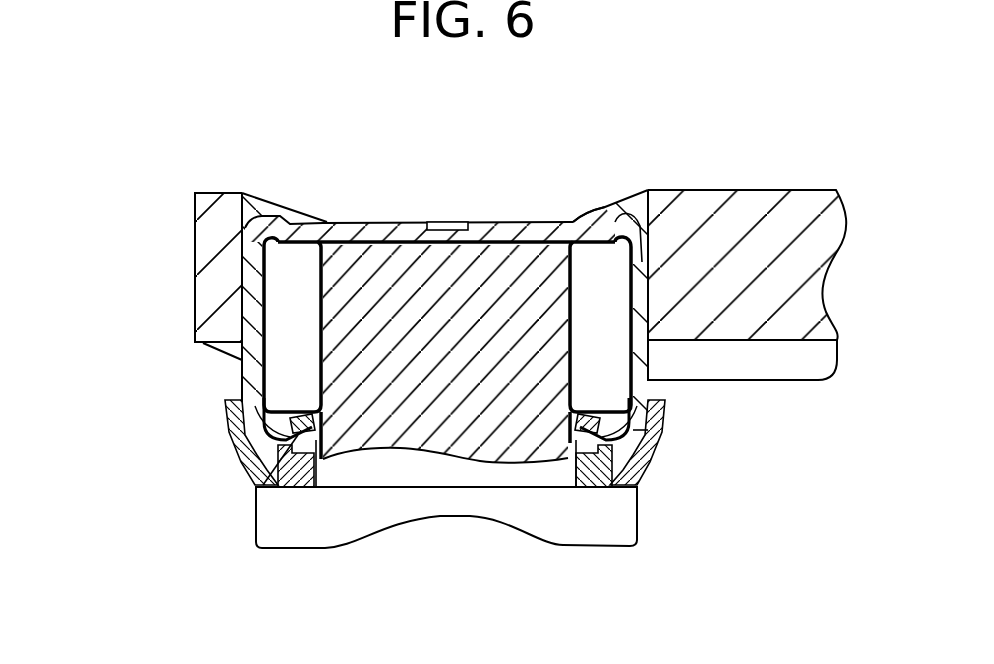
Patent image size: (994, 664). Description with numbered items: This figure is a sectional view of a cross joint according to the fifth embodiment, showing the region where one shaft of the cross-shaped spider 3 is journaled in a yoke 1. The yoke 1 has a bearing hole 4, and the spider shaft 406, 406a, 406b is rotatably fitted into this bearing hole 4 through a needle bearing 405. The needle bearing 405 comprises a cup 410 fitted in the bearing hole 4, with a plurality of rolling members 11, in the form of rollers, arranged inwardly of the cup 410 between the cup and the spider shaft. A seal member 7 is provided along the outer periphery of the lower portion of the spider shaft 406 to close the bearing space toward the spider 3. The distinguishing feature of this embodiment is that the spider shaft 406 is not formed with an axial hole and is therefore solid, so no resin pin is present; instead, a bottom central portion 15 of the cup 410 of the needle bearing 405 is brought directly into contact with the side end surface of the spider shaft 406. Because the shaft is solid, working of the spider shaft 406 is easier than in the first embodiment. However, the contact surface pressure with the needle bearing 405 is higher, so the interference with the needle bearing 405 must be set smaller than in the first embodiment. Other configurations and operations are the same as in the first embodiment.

The yoke 1 is at (773, 190).
The spider 3 is at (241, 496).
The bearing hole 4 is at (633, 197).
The seal member 7 is at (665, 440).
The rolling members 11 is at (612, 363).
The bottom central portion 15 is at (457, 222).
The needle bearing 405 is at (594, 212).
The spider shaft 406 is at (107, 305).
The spider shaft 406a is at (323, 264).
The spider shaft 406b is at (343, 381).
The cup 410 is at (492, 230).